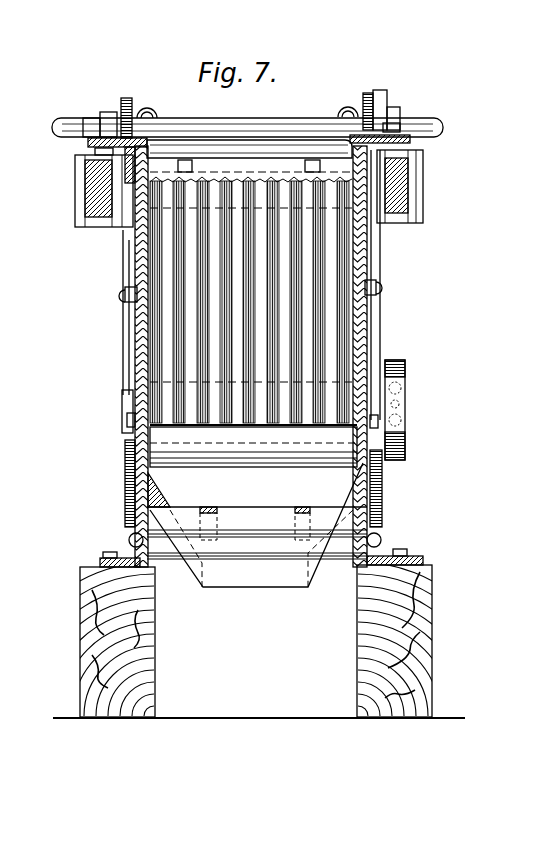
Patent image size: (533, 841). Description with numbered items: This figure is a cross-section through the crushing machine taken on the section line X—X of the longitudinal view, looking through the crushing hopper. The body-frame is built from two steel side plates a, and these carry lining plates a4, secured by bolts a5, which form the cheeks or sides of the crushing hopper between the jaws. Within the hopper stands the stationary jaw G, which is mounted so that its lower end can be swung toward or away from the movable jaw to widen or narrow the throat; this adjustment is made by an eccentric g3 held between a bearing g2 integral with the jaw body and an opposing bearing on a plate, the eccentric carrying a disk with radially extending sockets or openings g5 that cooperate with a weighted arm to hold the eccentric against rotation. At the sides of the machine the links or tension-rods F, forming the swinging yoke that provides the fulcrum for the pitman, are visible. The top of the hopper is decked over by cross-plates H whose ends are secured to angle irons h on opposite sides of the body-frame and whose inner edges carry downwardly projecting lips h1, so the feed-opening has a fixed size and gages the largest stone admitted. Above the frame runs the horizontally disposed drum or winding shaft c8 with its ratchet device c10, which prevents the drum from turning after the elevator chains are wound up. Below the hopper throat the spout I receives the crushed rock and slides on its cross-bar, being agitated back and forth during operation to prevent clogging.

The cross-plates H is at (250, 120).
The section line X— X is at (126, 98).
The ratchet device c10 is at (381, 110).
The drum or winding shaft c8 is at (283, 122).
The downwardly projecting lips h1 is at (181, 157).
The angle irons h is at (90, 143).
The links or tension-rods F is at (93, 190).
The steel side plates a is at (136, 338).
The lining plates a4 is at (407, 303).
The bolts a5 is at (427, 388).
The stationary jaw G is at (303, 257).
The spout I is at (262, 569).
The bearing g2 is at (122, 421).
The eccentric g3 is at (406, 423).
The radially extending sockets or openings g5 is at (421, 392).